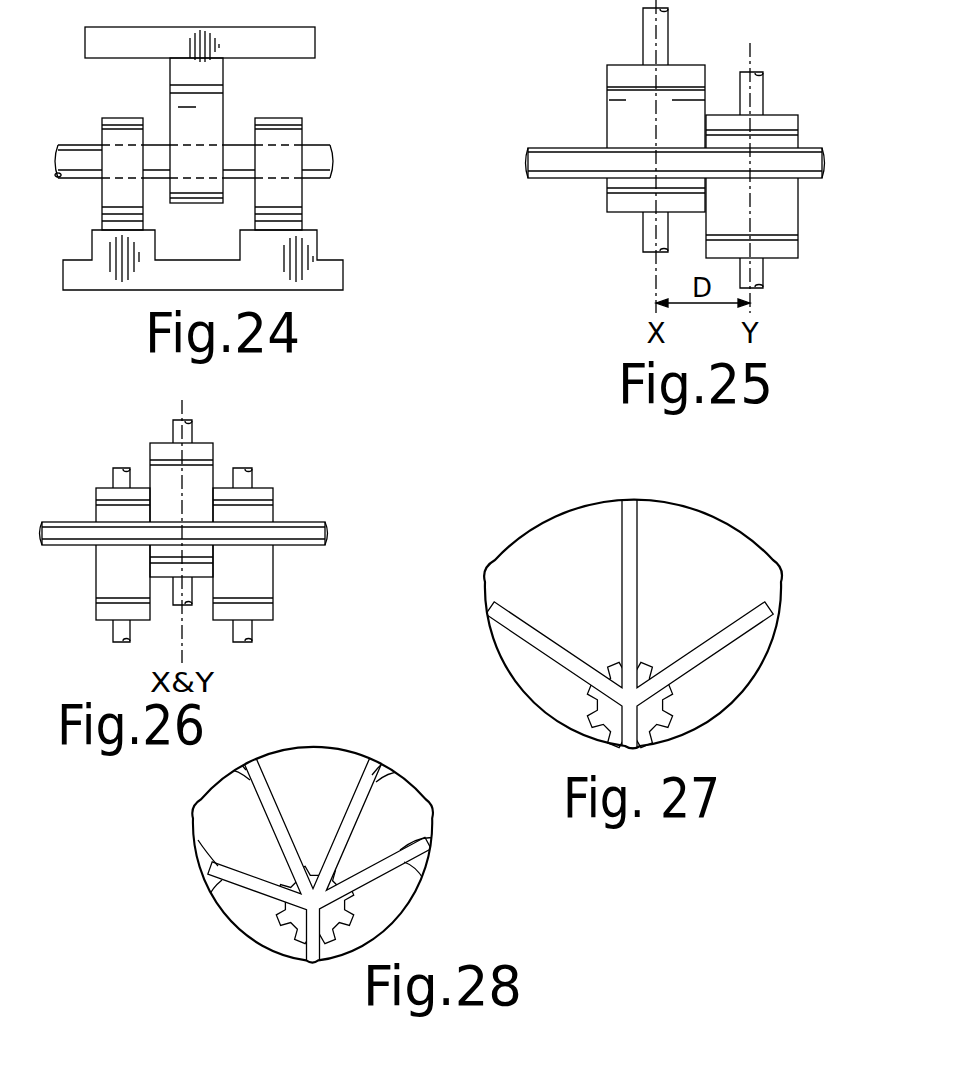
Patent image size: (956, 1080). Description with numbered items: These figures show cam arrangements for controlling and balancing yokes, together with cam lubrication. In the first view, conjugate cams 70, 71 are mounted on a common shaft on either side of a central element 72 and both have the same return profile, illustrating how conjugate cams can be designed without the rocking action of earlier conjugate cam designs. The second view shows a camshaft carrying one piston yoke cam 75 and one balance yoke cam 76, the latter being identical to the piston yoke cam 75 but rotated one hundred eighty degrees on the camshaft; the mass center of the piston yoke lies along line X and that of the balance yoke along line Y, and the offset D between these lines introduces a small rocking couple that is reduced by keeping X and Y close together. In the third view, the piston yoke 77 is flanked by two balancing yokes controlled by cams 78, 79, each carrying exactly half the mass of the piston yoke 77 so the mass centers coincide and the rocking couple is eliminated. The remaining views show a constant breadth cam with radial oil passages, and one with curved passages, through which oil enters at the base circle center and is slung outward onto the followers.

In FIG. 24, the cam 70 is at (119, 127).
In FIG. 24, the cam 71 is at (281, 122).
In FIG. 24, the roller 72 is at (214, 106).
In FIG. 25, the piston yoke cam 75 is at (621, 101).
In FIG. 25, the balance yoke cam 76 is at (785, 232).
In FIG. 26, the piston yoke 77 is at (210, 471).
In FIG. 26, the cam 78 is at (262, 512).
In FIG. 26, the cam 79 is at (105, 510).